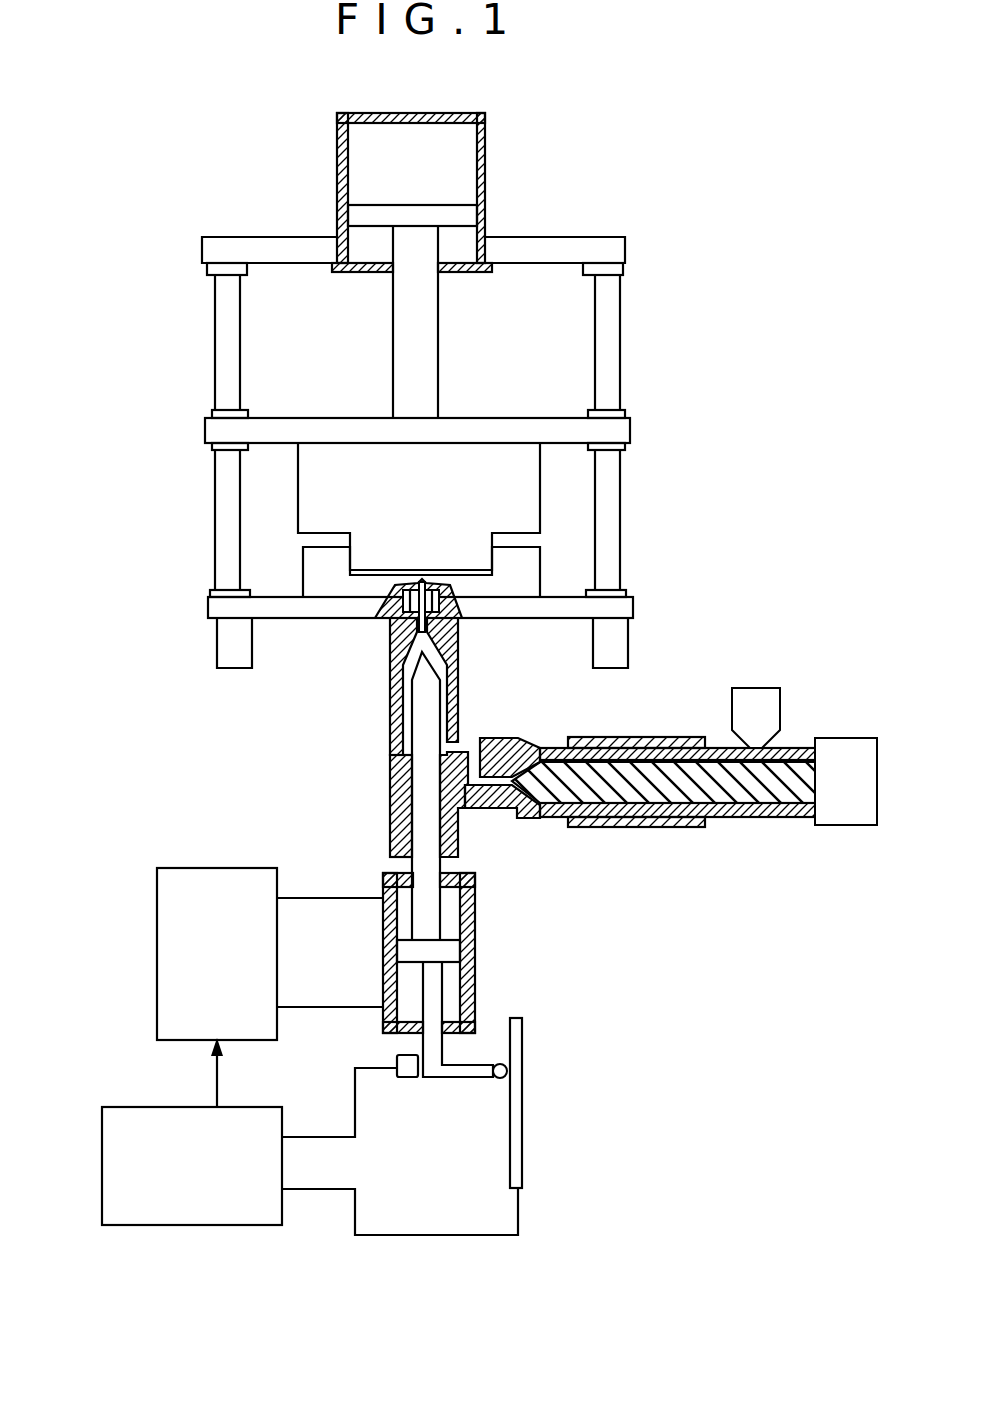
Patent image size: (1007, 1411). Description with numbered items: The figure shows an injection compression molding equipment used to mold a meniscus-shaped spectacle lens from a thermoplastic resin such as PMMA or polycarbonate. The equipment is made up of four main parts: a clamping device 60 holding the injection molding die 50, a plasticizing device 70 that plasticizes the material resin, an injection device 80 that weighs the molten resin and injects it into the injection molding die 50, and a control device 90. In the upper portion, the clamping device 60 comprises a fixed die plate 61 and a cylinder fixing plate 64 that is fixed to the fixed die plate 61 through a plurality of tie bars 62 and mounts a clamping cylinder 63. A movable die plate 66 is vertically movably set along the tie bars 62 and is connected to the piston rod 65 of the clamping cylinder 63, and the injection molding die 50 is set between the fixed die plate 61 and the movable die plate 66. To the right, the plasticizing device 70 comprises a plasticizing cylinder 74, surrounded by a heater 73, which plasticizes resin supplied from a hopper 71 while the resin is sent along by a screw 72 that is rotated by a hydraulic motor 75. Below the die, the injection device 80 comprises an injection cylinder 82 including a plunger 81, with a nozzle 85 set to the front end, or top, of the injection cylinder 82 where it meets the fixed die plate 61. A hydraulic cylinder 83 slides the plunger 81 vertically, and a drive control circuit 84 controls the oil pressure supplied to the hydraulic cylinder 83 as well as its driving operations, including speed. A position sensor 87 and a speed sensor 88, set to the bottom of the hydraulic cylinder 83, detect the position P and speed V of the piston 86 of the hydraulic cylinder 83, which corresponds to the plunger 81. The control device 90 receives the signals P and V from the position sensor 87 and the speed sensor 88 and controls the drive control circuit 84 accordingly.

The injection molding die 50 is at (540, 498).
The clamping device 60 is at (660, 139).
The fixed die plate 61 is at (635, 609).
The tie bars 62 is at (207, 352).
The clamping cylinder 63 is at (488, 169).
The cylinder fixing plate 64 is at (548, 246).
The piston rod 65 is at (438, 346).
The movable die plate 66 is at (541, 418).
The plasticizing device 70 is at (773, 897).
The hopper 71 is at (770, 688).
The screw 72 is at (735, 793).
The heater 73 is at (640, 827).
The plasticizing cylinder 74 is at (553, 817).
The hydraulic motor 75 is at (841, 825).
The injection device 80 is at (176, 785).
The plunger 81 is at (422, 800).
The injection cylinder 82 is at (390, 751).
The hydraulic cylinder 83 is at (385, 956).
The drive control circuit 84 is at (157, 963).
The nozzle 85 is at (377, 605).
The piston 86 is at (447, 955).
The position sensor 87 is at (522, 1137).
The speed sensor 88 is at (410, 1077).
The control device 90 is at (178, 1225).